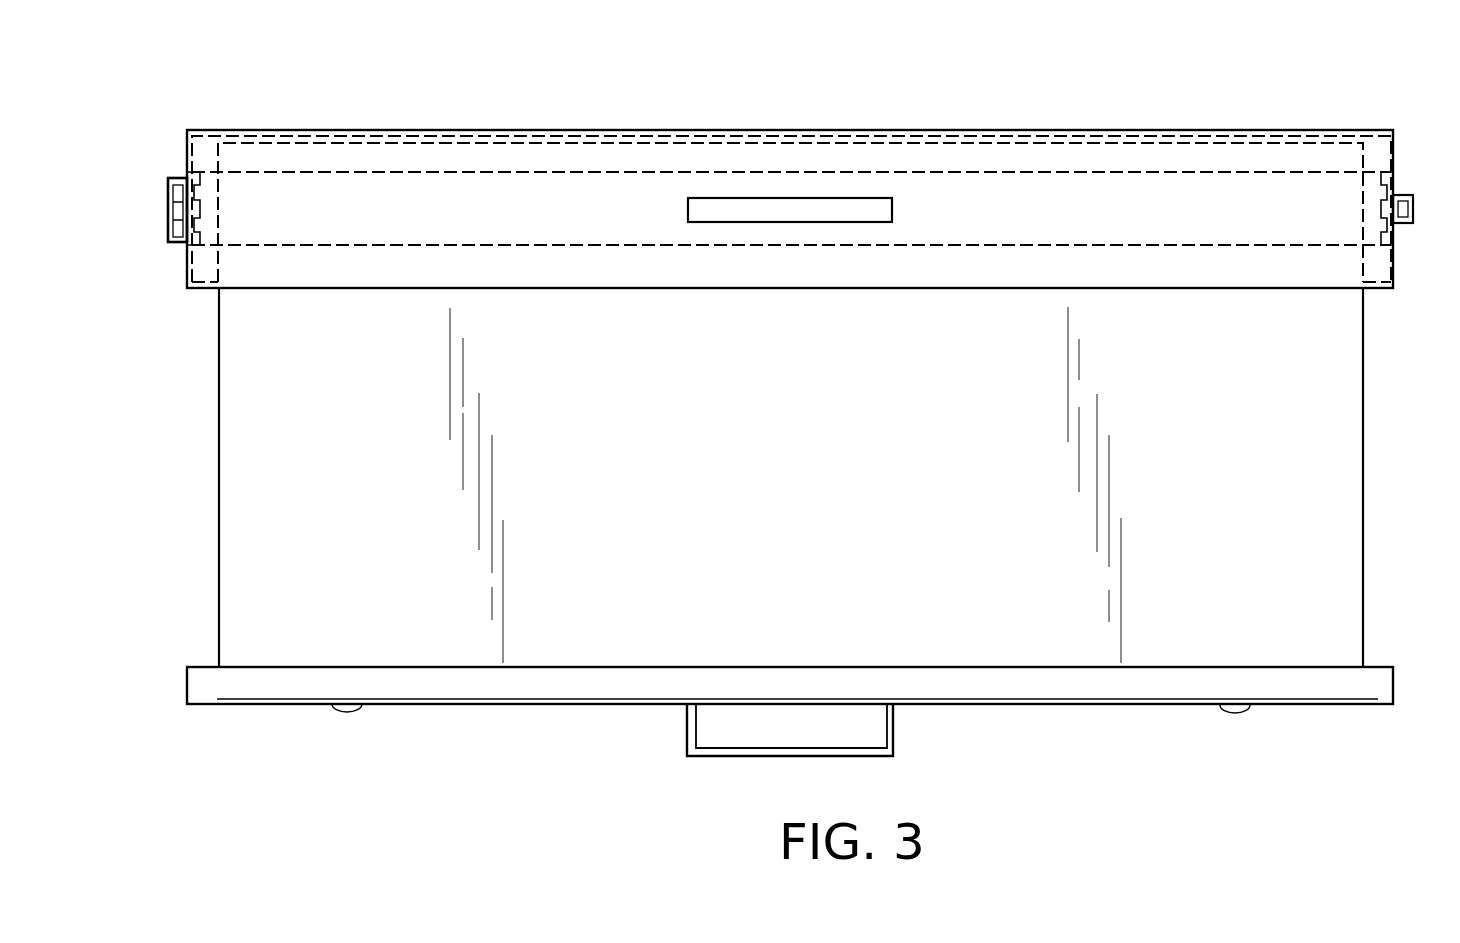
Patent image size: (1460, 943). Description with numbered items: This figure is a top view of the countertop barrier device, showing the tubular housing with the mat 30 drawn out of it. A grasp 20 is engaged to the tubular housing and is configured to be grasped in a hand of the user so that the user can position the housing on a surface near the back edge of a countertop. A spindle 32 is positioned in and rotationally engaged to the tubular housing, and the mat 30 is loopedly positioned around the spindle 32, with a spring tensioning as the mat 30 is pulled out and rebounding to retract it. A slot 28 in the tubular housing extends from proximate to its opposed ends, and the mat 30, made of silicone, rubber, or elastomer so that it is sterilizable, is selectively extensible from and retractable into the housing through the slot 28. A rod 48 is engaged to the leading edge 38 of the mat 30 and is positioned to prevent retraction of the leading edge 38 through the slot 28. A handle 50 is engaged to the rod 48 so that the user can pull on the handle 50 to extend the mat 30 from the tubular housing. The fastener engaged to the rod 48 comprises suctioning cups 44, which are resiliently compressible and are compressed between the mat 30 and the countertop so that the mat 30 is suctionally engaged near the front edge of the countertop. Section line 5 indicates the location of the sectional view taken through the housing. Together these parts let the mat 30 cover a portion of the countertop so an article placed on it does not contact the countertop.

The section line 5- 5 is at (176, 162).
The grasp 20 is at (776, 194).
The slot 28 is at (1252, 296).
The mat 30 is at (300, 403).
The spindle 32 is at (166, 207).
The leading edge 38 is at (1286, 660).
The suctioning cups 44 is at (347, 718).
The rod 48 is at (1362, 681).
The handle 50 is at (900, 727).